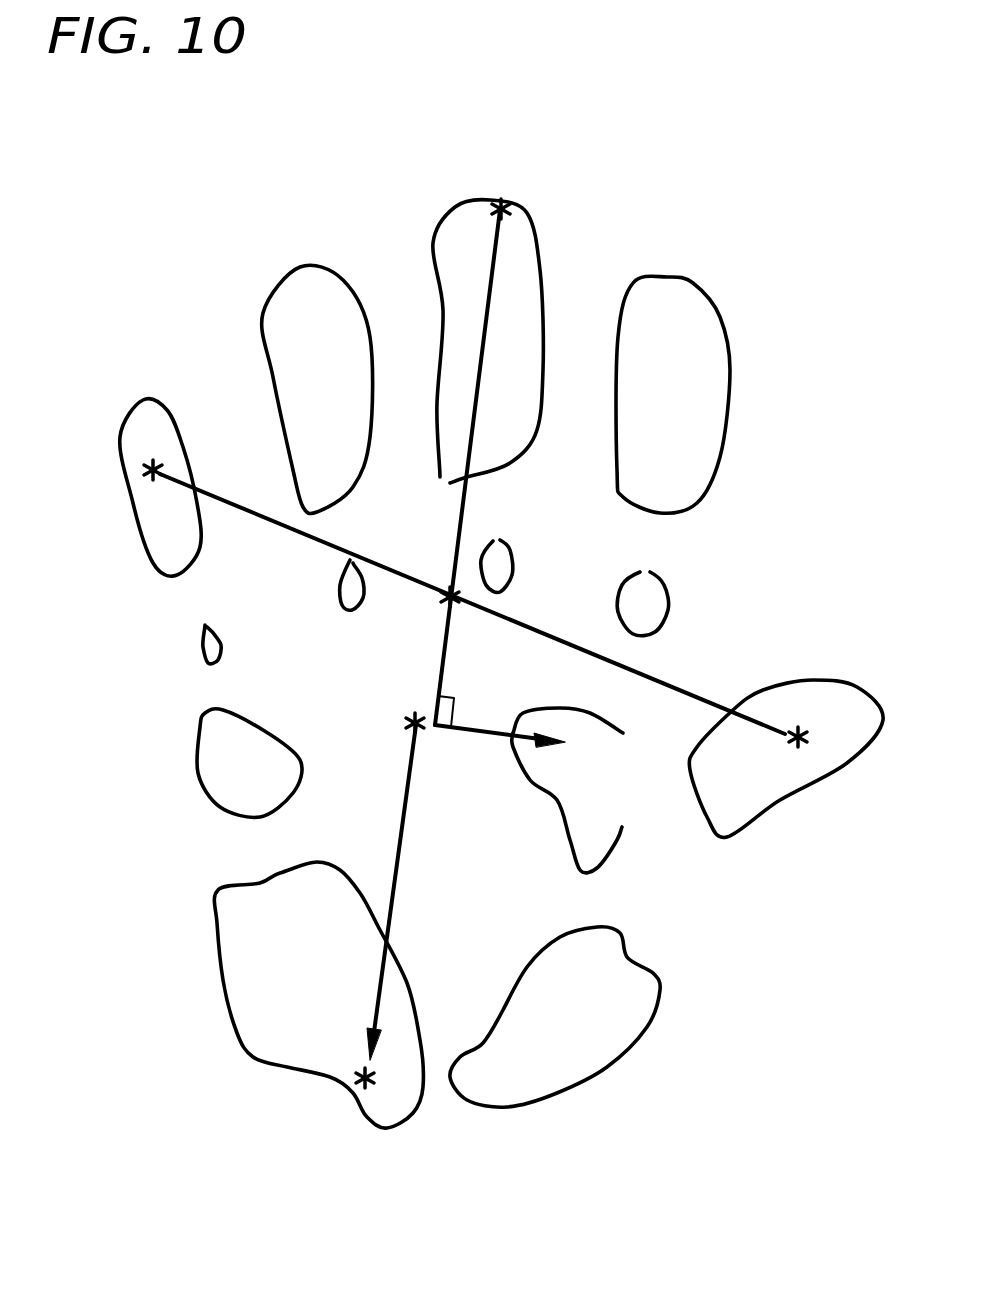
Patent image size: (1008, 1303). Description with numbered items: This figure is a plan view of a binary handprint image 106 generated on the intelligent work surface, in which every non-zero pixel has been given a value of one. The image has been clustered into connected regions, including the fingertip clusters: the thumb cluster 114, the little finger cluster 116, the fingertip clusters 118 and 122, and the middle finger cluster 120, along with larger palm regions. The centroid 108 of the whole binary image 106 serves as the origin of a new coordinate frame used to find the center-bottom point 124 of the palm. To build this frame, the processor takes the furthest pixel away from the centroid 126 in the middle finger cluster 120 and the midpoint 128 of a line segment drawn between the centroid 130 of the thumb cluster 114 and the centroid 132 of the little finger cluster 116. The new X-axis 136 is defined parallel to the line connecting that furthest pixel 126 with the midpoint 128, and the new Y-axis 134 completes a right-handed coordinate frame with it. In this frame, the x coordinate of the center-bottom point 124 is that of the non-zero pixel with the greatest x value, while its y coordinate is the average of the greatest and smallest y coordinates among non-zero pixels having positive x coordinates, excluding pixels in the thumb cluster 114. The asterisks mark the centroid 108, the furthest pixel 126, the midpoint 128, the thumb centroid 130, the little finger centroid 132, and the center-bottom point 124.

The handprint image 106 is at (277, 153).
The centroid 108 is at (410, 718).
The thumb cluster 114 is at (796, 680).
The little finger cluster 116 is at (143, 399).
The fingertip cluster 118 is at (292, 269).
The middle finger cluster 120 is at (433, 244).
The fingertip cluster 122 is at (667, 277).
The center-bottom point 124 is at (360, 1072).
The furthest pixel away from the centroid 126 is at (512, 208).
The midpoint 128 is at (446, 592).
The centroid of thumb cluster 130 is at (788, 741).
The centroid of little finger cluster 132 is at (143, 471).
The new Y-axis 134 is at (492, 728).
The new X-axis 136 is at (405, 828).